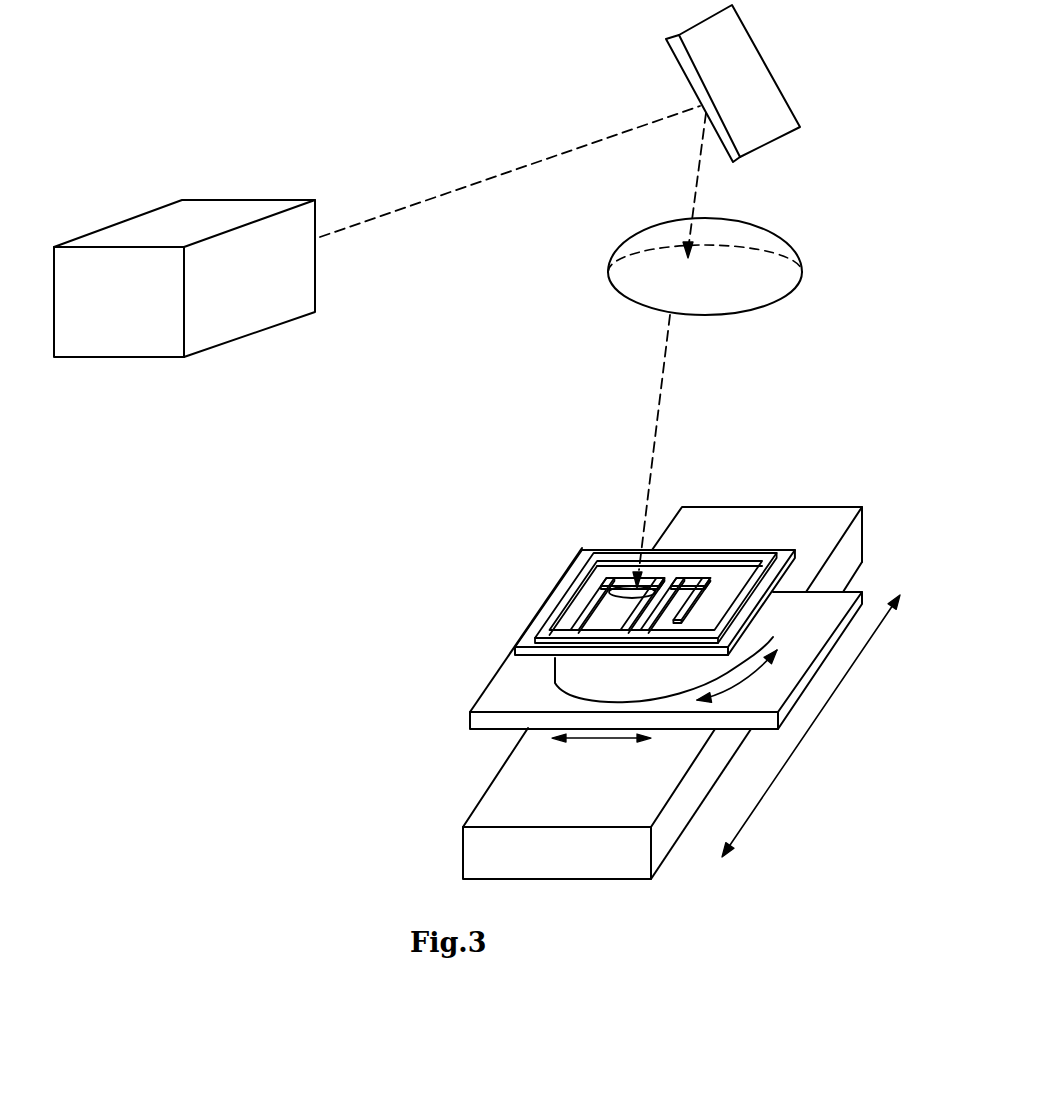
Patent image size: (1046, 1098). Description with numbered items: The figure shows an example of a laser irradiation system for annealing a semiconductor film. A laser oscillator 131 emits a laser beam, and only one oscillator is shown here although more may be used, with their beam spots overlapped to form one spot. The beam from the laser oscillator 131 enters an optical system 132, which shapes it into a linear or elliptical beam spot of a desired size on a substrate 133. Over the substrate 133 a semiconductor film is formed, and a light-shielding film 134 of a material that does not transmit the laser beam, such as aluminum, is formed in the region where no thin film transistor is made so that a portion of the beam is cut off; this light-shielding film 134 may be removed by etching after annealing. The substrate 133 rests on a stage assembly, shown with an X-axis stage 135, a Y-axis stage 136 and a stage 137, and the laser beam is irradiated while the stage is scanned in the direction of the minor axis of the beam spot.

The laser oscillator 131 is at (225, 227).
The optical system 132 is at (763, 107).
The substrate 133 is at (537, 627).
The light-shielding film 134 is at (600, 605).
The X-axis stage 135 is at (507, 807).
The Y-axis stage 136 is at (490, 720).
The theta-axis stage 137 is at (583, 690).